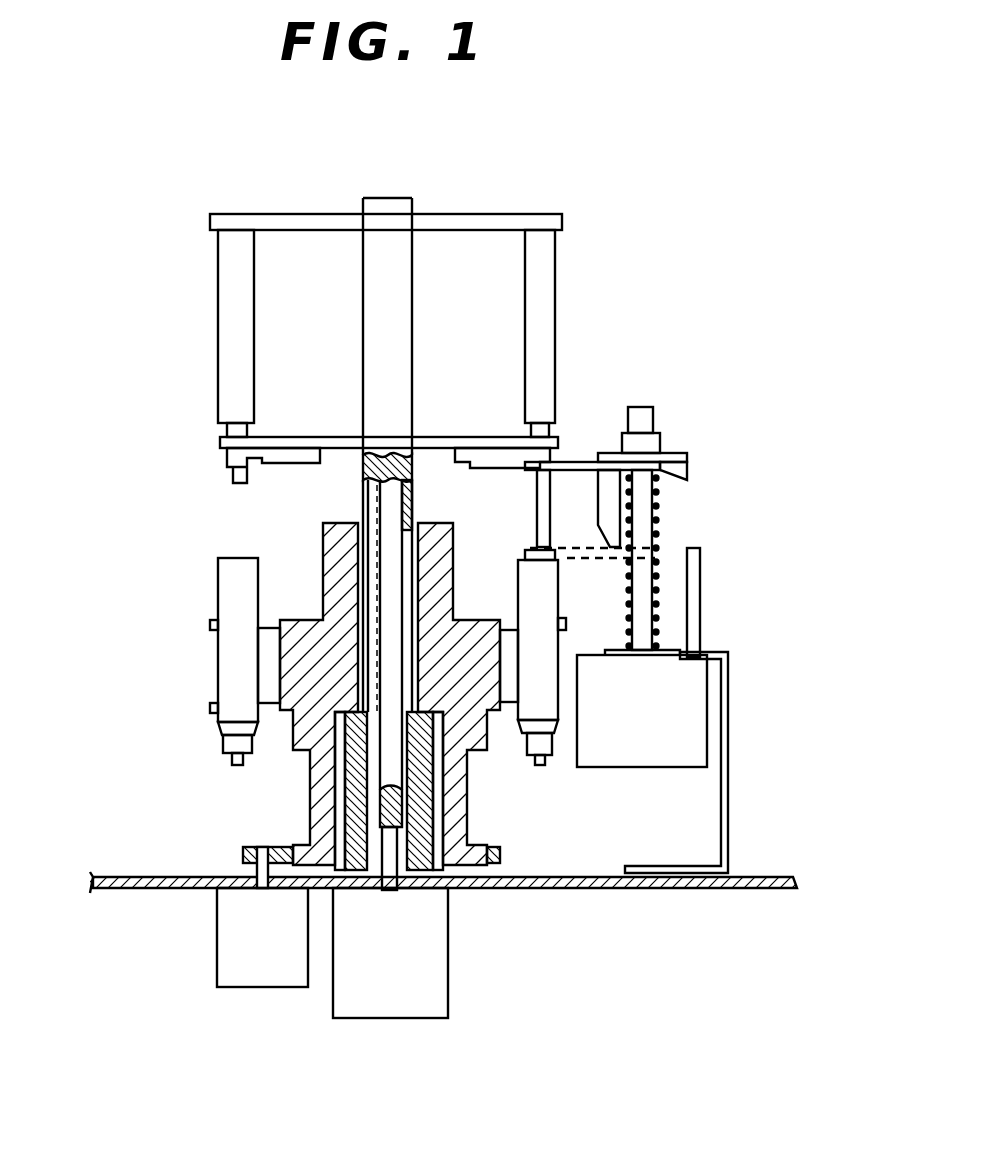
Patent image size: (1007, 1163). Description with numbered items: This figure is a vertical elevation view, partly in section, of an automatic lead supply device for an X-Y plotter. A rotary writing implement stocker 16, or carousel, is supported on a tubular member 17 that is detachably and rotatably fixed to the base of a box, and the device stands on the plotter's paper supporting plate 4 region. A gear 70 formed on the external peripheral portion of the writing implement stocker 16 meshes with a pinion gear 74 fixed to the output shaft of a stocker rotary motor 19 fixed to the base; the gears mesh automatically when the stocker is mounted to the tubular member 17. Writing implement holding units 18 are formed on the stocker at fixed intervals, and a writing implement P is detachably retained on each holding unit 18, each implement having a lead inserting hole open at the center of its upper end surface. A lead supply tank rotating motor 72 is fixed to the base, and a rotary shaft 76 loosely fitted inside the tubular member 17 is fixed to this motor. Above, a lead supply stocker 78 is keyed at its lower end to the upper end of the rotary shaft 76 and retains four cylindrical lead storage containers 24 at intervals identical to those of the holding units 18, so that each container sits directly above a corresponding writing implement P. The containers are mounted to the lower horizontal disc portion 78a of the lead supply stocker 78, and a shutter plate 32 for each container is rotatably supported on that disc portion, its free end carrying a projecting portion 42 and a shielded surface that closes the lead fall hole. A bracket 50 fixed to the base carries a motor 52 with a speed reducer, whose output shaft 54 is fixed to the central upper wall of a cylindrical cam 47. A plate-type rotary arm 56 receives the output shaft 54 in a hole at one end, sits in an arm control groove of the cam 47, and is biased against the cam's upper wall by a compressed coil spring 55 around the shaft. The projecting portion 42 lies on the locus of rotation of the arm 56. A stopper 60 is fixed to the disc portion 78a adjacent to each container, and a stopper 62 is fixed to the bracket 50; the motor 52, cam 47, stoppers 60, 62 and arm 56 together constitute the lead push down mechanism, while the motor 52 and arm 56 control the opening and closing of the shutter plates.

The paper supporting plate 4 is at (607, 890).
The writing implement stocker 16 is at (322, 547).
The tubular member 17 is at (420, 850).
The writing implement holding unit 18 is at (208, 657).
The stocker rotary motor 19 is at (242, 987).
The lead storage container 24 is at (230, 312).
The shutter plate 32 is at (465, 455).
The projecting portion 42 is at (548, 464).
The cylindrical cam 47 is at (687, 456).
The bracket 50 is at (725, 810).
The motor 52 is at (690, 710).
The output shaft 54 is at (655, 545).
The coil spring 55 is at (657, 497).
The rotary arm 56 is at (585, 465).
The stopper 60 is at (537, 490).
The stopper 62 is at (695, 575).
The gear 70 is at (492, 865).
The lead supply tank rotating motor 72 is at (400, 1018).
The pinion gear 74 is at (243, 852).
The rotary shaft 76 is at (393, 758).
The lead supply stocker 78 is at (270, 214).
The lower horizontal disc portion 78a is at (300, 436).
The writing implement P is at (227, 689).